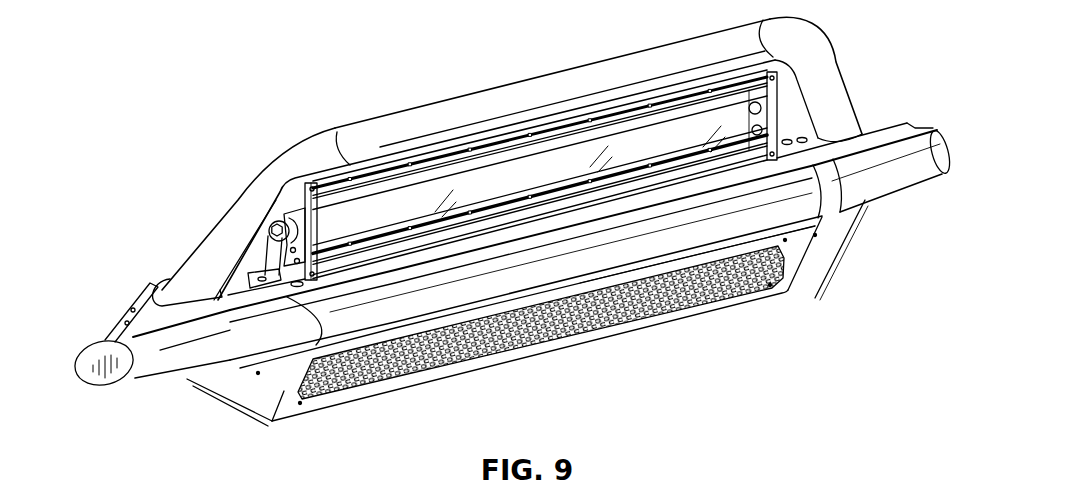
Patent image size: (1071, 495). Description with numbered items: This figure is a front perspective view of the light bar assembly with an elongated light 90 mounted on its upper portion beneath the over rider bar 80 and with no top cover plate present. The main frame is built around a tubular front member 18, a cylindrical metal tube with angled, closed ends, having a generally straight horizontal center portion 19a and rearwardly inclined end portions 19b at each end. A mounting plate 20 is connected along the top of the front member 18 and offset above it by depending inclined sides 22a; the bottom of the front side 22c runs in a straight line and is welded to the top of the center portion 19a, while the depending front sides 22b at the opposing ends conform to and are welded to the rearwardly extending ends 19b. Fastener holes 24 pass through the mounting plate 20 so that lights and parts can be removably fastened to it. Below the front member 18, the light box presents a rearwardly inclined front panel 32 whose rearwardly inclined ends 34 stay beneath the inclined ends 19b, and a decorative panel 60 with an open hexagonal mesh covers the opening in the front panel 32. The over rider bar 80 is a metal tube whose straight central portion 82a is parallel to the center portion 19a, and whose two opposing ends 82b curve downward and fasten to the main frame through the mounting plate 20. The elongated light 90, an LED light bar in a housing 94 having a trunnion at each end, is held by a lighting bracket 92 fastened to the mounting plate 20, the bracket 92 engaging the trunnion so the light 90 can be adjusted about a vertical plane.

The tubular front member 18 is at (606, 256).
The center portion of the front member 19a is at (707, 240).
The rearwardly inclined end portion of the front member 19b is at (897, 180).
The mounting plate 20 is at (804, 159).
The inclined side of the mounting plate 22a is at (753, 188).
The depending front side at the mounting plate ends 22b is at (162, 330).
The front side of the mounting plate 22c is at (118, 322).
The fastener holes 24 is at (789, 139).
The front panel 32 is at (540, 350).
The rearwardly inclined ends of the front panel 34 is at (230, 385).
The decorative panel 60 is at (461, 362).
The over rider bar 80 is at (438, 100).
The central portion of the over rider bar 82a is at (553, 78).
The ends of the over rider bar 82b is at (238, 208).
The elongated light 90 is at (362, 220).
The lighting bracket 92 is at (258, 256).
The housing 94 is at (292, 245).